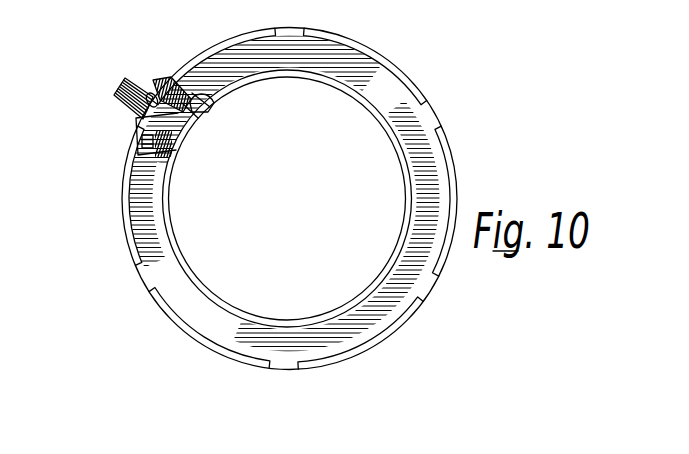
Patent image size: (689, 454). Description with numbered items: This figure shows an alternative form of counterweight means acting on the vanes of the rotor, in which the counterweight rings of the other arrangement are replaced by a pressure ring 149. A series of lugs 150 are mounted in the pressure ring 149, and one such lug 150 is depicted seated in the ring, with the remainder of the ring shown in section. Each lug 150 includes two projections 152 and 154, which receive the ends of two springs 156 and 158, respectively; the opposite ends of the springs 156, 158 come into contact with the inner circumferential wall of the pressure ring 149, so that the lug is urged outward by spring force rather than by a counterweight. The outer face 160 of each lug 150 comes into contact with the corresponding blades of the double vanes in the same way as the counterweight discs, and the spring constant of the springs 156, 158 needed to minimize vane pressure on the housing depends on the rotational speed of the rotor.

The pressure ring 149 is at (448, 143).
The lug 150 is at (152, 91).
The projection 152 is at (135, 130).
The projection 154 is at (172, 80).
The spring 156 is at (133, 157).
The spring 158 is at (210, 98).
The outer face 160 is at (133, 88).